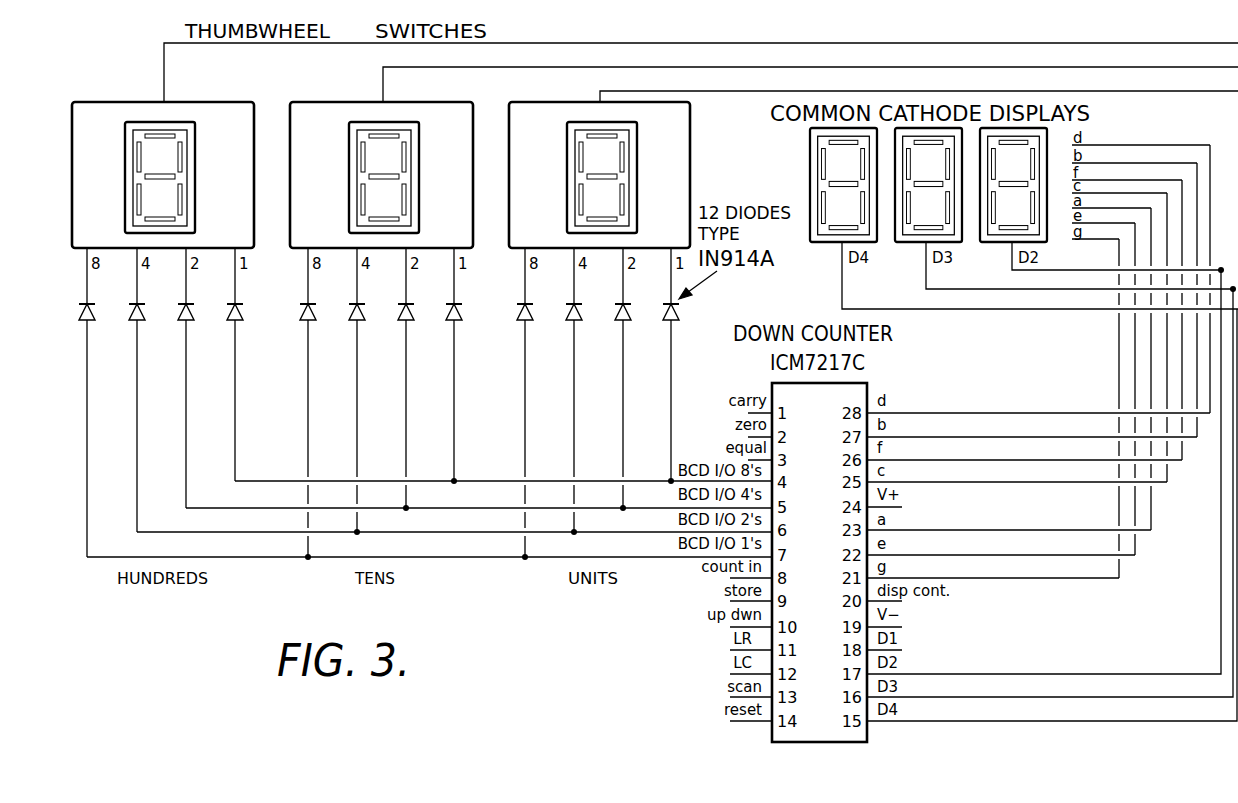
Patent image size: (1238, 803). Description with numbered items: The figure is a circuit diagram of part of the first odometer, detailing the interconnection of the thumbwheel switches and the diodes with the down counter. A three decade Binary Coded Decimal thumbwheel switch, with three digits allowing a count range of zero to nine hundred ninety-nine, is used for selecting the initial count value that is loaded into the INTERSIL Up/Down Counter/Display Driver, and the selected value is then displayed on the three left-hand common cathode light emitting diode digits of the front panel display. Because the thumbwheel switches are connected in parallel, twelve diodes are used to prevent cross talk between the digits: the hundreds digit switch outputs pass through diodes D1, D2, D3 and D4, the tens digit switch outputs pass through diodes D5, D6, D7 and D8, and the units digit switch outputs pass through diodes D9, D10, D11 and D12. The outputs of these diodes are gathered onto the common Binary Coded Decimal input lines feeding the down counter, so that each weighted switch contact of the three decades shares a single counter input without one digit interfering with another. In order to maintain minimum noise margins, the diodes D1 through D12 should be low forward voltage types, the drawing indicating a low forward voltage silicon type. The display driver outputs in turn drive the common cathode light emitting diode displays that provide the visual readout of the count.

The diode D1 is at (95, 402).
The diode D2 is at (145, 390).
The diode D3 is at (194, 378).
The diode D4 is at (243, 364).
The diode D5 is at (316, 402).
The diode D6 is at (365, 390).
The diode D7 is at (414, 378).
The diode D8 is at (462, 364).
The diode D9 is at (533, 402).
The diode D10 is at (587, 390).
The diode D11 is at (636, 378).
The diode D12 is at (684, 364).